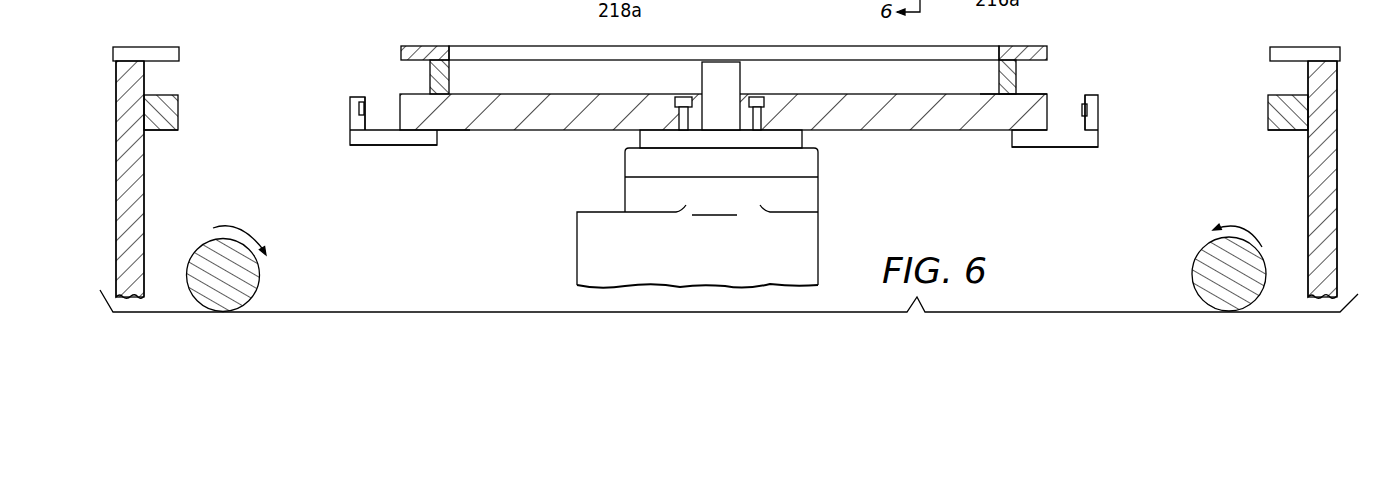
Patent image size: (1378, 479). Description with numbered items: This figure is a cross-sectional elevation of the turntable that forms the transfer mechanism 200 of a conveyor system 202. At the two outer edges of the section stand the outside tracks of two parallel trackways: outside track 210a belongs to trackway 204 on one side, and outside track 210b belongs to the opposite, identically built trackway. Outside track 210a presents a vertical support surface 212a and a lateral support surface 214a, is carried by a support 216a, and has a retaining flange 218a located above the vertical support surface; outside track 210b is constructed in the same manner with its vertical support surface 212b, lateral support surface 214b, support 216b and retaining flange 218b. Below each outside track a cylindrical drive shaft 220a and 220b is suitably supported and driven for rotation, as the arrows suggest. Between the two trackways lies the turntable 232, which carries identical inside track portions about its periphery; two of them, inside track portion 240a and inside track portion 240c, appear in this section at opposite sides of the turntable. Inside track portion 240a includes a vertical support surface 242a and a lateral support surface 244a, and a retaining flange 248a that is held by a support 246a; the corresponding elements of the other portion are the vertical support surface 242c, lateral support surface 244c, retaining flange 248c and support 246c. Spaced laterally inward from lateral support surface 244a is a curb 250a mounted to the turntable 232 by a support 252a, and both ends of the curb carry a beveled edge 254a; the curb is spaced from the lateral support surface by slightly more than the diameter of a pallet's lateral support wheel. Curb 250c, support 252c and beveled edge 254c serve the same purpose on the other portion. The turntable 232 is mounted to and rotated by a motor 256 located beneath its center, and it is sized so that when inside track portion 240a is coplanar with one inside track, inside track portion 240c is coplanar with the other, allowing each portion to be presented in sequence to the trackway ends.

The transfer mechanism 200 is at (478, 207).
The conveyor system 202 is at (1348, 164).
The trackway 204 is at (90, 88).
The outside track 210a is at (242, 115).
The outside track 210b is at (1237, 126).
The vertical support surface 212a is at (172, 95).
The vertical support surface 212b is at (1292, 96).
The lateral support surface 214a is at (178, 132).
The lateral support surface 214b is at (1268, 120).
The support 216a is at (122, 178).
The support 216b is at (1336, 234).
The retaining flange 218a is at (170, 46).
The retaining flange 218b is at (1310, 46).
The cylindrical drive shaft 220a is at (262, 270).
The cylindrical drive shaft 220b is at (1193, 266).
The turntable 232 is at (557, 125).
The inside track portion 240a is at (373, 56).
The inside track portion 240c is at (1112, 60).
The vertical support surface 242a is at (435, 88).
The vertical support surface 242c is at (1038, 93).
The lateral support surface 244a is at (372, 132).
The lateral support surface 244c is at (1050, 136).
The support 246a is at (455, 130).
The support 246c is at (998, 74).
The retaining flange 248a is at (402, 47).
The retaining flange 248c is at (1048, 50).
The curb 250a is at (355, 112).
The curb 250c is at (1097, 115).
The support 252a is at (397, 148).
The support 252c is at (1068, 148).
The beveled edge 254a is at (366, 101).
The beveled edge 254c is at (1076, 120).
The motor 256 is at (697, 209).